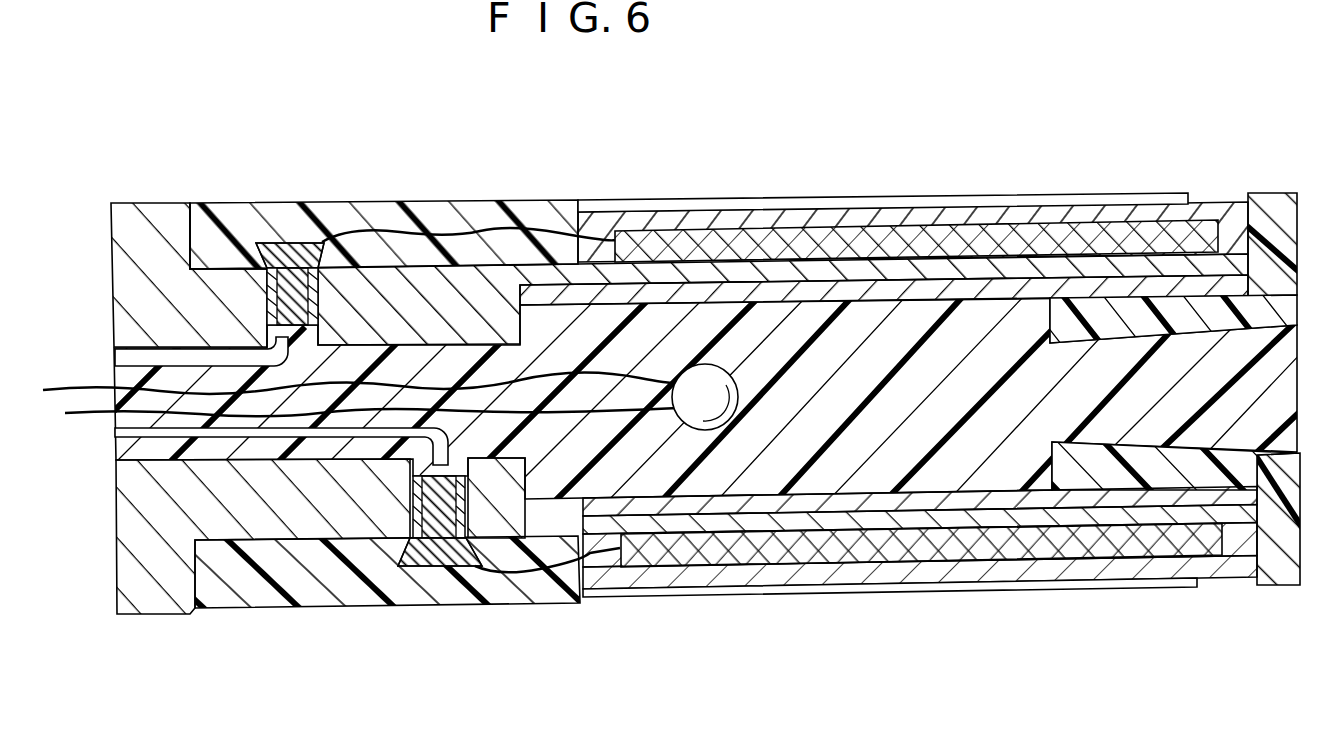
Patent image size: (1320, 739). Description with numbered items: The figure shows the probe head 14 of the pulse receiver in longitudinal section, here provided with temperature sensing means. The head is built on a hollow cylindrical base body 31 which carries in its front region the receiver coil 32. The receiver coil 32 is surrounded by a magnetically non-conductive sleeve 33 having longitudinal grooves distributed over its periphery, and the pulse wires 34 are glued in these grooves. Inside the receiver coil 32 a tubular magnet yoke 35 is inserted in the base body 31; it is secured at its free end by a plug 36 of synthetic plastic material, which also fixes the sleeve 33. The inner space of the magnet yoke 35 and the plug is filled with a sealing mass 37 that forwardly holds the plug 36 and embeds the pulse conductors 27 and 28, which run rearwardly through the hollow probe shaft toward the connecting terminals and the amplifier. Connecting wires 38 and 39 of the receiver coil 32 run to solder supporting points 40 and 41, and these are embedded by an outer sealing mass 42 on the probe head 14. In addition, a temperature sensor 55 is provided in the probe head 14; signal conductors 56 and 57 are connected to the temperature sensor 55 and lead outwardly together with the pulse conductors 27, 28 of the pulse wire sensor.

The probe head 14 is at (880, 186).
The pulse conductor 27 is at (140, 372).
The pulse conductor 28 is at (147, 432).
The base body 31 is at (165, 592).
The receiver coil 32 is at (1102, 225).
The sleeve 33 is at (819, 212).
The pulse wires 34 is at (957, 222).
The magnet yoke 35 is at (942, 502).
The plug 36 is at (1286, 545).
The sealing mass 37 is at (772, 315).
The connecting wire 38 is at (440, 230).
The connecting wire 39 is at (540, 570).
The solder supporting point 40 is at (289, 258).
The solder supporting point 41 is at (437, 545).
The outer sealing mass 42 is at (223, 218).
The temperature sensor 55 is at (702, 425).
The signal conductor 56 is at (87, 390).
The signal conductor 57 is at (80, 433).